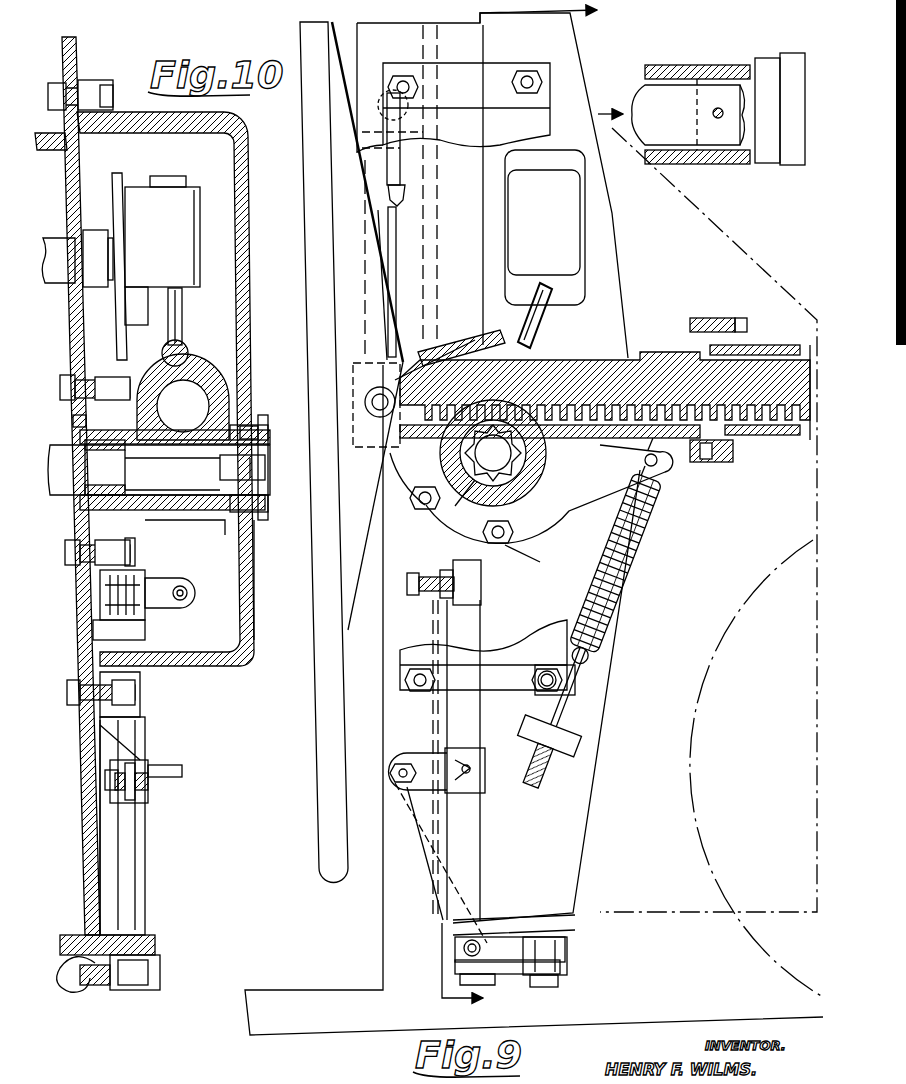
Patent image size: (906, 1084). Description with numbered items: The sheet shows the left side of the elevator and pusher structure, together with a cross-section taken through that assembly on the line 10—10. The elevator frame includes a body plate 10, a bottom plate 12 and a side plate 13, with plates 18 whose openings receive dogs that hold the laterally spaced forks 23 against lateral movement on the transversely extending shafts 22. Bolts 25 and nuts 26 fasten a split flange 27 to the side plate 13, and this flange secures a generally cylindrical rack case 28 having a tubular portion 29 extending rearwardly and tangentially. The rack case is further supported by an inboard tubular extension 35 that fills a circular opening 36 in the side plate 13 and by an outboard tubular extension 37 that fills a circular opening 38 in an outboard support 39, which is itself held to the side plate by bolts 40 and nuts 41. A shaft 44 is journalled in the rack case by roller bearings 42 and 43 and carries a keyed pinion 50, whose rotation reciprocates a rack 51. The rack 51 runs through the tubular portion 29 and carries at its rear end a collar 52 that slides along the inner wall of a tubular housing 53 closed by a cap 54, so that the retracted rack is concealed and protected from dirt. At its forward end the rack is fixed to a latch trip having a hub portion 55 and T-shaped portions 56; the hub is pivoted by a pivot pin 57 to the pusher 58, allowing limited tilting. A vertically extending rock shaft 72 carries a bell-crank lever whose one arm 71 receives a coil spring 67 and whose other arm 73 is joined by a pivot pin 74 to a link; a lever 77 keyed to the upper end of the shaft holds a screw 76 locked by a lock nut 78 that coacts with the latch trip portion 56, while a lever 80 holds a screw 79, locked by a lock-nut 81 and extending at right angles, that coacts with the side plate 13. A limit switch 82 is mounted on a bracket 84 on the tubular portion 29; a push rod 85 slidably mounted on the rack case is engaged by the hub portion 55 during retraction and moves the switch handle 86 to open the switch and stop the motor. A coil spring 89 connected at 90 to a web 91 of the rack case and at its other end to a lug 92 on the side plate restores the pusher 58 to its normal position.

In FIG. 9, the body plate 10 is at (536, 507).
In FIG. 9, the bottom plate 12 is at (575, 928).
In FIG. 10, the side plate 13 is at (100, 874).
In FIG. 9, the side plate 13 is at (585, 845).
In FIG. 10, the plate 18 is at (60, 150).
In FIG. 10, the transversely extending shaft 22 is at (58, 242).
In FIG. 9, the fork 23 is at (300, 998).
In FIG. 10, the bolt 25 is at (75, 560).
In FIG. 9, the bolt 25 is at (533, 567).
In FIG. 10, the nut 26 is at (135, 552).
In FIG. 9, the nut 26 is at (505, 545).
In FIG. 10, the split flange 27 is at (100, 376).
In FIG. 9, the split flange 27 is at (580, 500).
In FIG. 10, the rack case 28 is at (212, 528).
In FIG. 9, the rack case 28 is at (505, 538).
In FIG. 10, the tubular portion 29 is at (222, 380).
In FIG. 9, the tubular portion 29 is at (600, 355).
In FIG. 10, the tubular extension 35 is at (72, 548).
In FIG. 10, the circular opening 36 is at (72, 420).
In FIG. 10, the tubular extension 37 is at (255, 508).
In FIG. 10, the circular opening 38 is at (250, 428).
In FIG. 10, the outboard support 39 is at (256, 582).
In FIG. 9, the outboard support 39 is at (545, 115).
In FIG. 10, the bolt 40 is at (138, 696).
In FIG. 9, the bolt 40 is at (550, 692).
In FIG. 10, the nut 41 is at (128, 705).
In FIG. 9, the nut 41 is at (535, 690).
In FIG. 10, the roller bearing 42 is at (80, 442).
In FIG. 10, the roller bearing 43 is at (258, 468).
In FIG. 10, the shaft 44 is at (68, 488).
In FIG. 9, the shaft 44 is at (525, 460).
In FIG. 10, the pinion 50 is at (180, 510).
In FIG. 9, the pinion 50 is at (460, 506).
In FIG. 10, the rack 51 is at (252, 360).
In FIG. 9, the rack 51 is at (735, 452).
In FIG. 9, the collar 52 is at (722, 164).
In FIG. 9, the tubular housing 53 is at (780, 334).
In FIG. 9, the cap 54 is at (795, 160).
In FIG. 9, the hub portion 55 is at (408, 358).
In FIG. 9, the T-shaped portion 56 is at (395, 238).
In FIG. 10, the pivot pin 57 is at (262, 432).
In FIG. 9, the pivot pin 57 is at (365, 410).
In FIG. 9, the pusher 58 is at (322, 748).
In FIG. 10, the coil spring 67 is at (72, 985).
In FIG. 10, the bell-crank arm 71 is at (115, 988).
In FIG. 10, the rock shaft 72 is at (146, 848).
In FIG. 9, the rock shaft 72 is at (475, 822).
In FIG. 9, the bell-crank arm 73 is at (510, 985).
In FIG. 9, the pivot pin 74 is at (548, 988).
In FIG. 10, the screw 76 is at (190, 590).
In FIG. 9, the screw 76 is at (425, 585).
In FIG. 10, the lever 77 is at (168, 602).
In FIG. 9, the lever 77 is at (452, 598).
In FIG. 9, the lock nut 78 is at (482, 605).
In FIG. 10, the screw 79 is at (110, 785).
In FIG. 9, the screw 79 is at (395, 775).
In FIG. 10, the lever 80 is at (130, 800).
In FIG. 9, the lever 80 is at (428, 760).
In FIG. 10, the lock-nut 81 is at (148, 790).
In FIG. 9, the lock-nut 81 is at (405, 790).
In FIG. 10, the limit switch 82 is at (180, 240).
In FIG. 9, the limit switch 82 is at (583, 210).
In FIG. 10, the bracket 84 is at (112, 185).
In FIG. 10, the push rod 85 is at (183, 348).
In FIG. 9, the push rod 85 is at (425, 352).
In FIG. 10, the switch handle 86 is at (185, 305).
In FIG. 9, the switch handle 86 is at (545, 332).
In FIG. 9, the coil spring 89 is at (632, 575).
In FIG. 9, the connection 90 is at (660, 470).
In FIG. 9, the web 91 is at (672, 478).
In FIG. 10, the lug 92 is at (175, 765).
In FIG. 9, the lug 92 is at (590, 762).